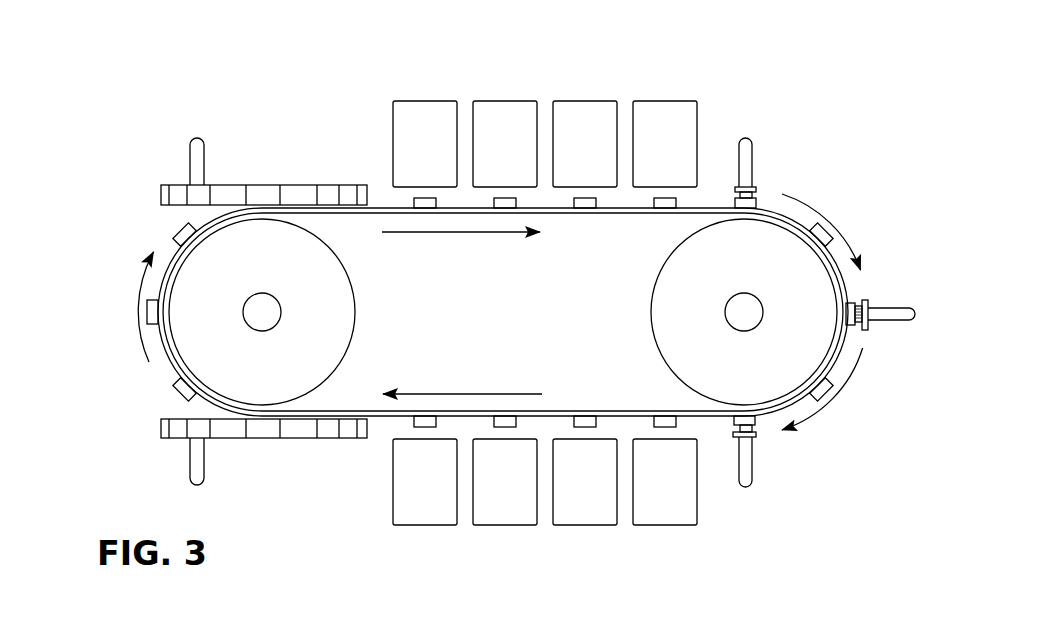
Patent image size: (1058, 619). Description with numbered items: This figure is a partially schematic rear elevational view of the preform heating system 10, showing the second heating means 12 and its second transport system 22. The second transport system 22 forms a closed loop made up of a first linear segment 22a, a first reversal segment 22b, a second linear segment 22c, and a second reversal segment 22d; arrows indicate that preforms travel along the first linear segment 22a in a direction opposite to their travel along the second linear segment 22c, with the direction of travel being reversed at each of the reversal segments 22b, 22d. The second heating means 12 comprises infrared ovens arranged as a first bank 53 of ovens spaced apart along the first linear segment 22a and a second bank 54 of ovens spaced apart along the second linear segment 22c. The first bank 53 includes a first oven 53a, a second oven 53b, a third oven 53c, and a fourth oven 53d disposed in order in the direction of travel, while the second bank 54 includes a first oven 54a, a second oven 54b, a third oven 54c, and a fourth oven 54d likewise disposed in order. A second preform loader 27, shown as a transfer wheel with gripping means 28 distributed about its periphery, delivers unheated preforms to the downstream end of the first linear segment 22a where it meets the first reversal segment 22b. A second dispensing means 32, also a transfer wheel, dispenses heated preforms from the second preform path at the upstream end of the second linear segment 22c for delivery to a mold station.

The preform heating system 10 is at (184, 72).
The second heating means 12 is at (867, 207).
The second transport system 22 is at (347, 216).
The first linear segment 22a is at (613, 405).
The first reversal segment 22b is at (158, 375).
The second linear segment 22c is at (613, 220).
The second reversal segment 22d is at (856, 287).
The second preform loader 27 is at (157, 450).
The gripping means 28 is at (260, 425).
The second dispensing means 32 is at (160, 176).
The first bank of ovens 53 is at (700, 532).
The first oven 53a is at (646, 494).
The second oven 53b is at (566, 494).
The third oven 53c is at (486, 494).
The fourth oven 53d is at (406, 494).
The second bank of ovens 54 is at (700, 92).
The first oven 54a is at (406, 155).
The second oven 54b is at (486, 155).
The third oven 54c is at (566, 155).
The fourth oven 54d is at (646, 155).